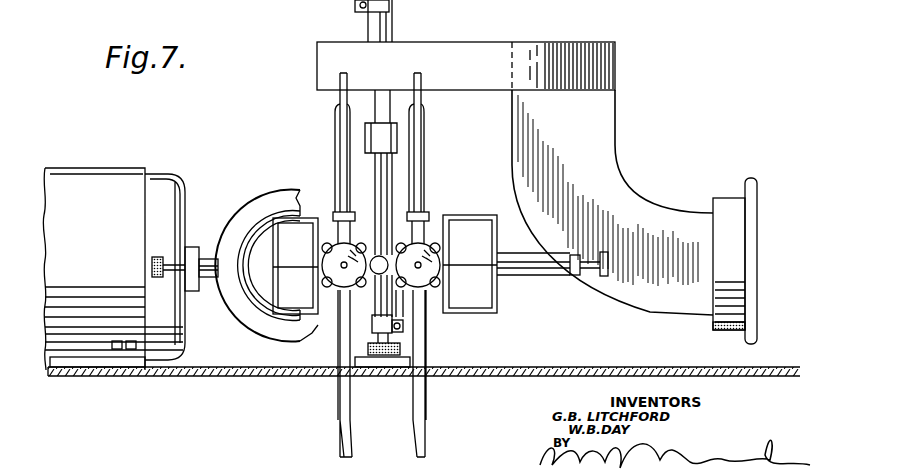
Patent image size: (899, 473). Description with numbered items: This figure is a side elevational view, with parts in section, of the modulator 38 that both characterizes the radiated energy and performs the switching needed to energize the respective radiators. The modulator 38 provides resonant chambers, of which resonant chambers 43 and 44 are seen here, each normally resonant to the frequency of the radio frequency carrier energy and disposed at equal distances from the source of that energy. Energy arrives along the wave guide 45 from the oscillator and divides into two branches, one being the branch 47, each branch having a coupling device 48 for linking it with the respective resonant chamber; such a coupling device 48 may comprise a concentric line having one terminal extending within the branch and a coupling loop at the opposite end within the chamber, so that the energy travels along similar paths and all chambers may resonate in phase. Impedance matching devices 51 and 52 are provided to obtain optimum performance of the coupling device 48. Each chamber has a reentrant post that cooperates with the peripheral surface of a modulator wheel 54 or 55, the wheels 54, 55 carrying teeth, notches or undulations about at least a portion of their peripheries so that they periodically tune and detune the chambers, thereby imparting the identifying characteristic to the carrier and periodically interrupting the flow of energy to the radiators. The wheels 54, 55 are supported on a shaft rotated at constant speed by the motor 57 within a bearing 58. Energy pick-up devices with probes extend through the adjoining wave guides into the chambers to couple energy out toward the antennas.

The modulator 38 is at (259, 182).
The resonant chamber 43 is at (338, 240).
The resonant chamber 44 is at (426, 242).
The wave guide 45 is at (617, 137).
The branch 47 is at (571, 43).
The coupling device 48 is at (392, 178).
The impedance matching device 51 is at (392, 33).
The impedance matching device 52 is at (393, 343).
The modulator wheel 54 is at (338, 138).
The modulator wheel 55 is at (424, 123).
The motor 57 is at (97, 174).
The bearing 58 is at (400, 302).